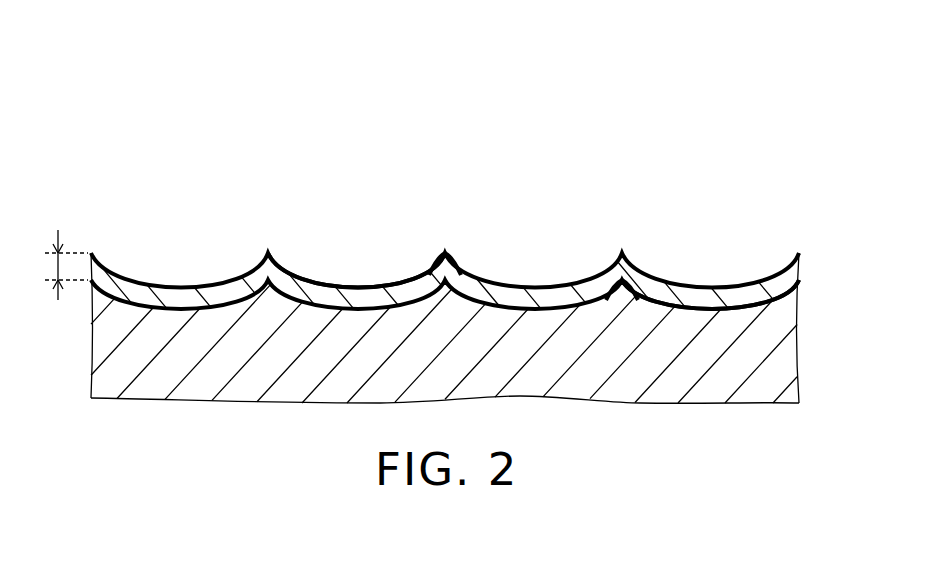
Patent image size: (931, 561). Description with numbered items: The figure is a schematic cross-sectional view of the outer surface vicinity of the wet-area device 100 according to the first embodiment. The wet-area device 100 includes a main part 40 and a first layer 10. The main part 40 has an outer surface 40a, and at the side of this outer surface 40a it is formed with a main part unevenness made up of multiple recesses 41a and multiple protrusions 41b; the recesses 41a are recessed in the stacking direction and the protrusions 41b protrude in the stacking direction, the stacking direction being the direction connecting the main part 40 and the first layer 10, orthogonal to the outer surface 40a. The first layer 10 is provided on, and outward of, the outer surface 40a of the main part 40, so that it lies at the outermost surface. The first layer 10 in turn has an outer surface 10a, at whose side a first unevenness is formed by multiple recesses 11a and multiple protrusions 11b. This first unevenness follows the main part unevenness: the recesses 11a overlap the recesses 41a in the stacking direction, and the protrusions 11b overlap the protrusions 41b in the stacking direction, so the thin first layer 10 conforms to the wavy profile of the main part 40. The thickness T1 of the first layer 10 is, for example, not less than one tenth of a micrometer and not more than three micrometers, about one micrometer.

The wet-area device 100 is at (780, 100).
The first layer 10 is at (775, 283).
The outer surface of the first layer 10a is at (310, 281).
The recesses of the first unevenness 11a is at (340, 286).
The protrusions of the first unevenness 11b is at (445, 255).
The main part 40 is at (775, 333).
The outer surface of the main part 40a is at (733, 307).
The recesses of the main part unevenness 41a is at (690, 307).
The protrusions of the main part unevenness 41b is at (628, 287).
The thickness of the first layer T1 is at (52, 265).